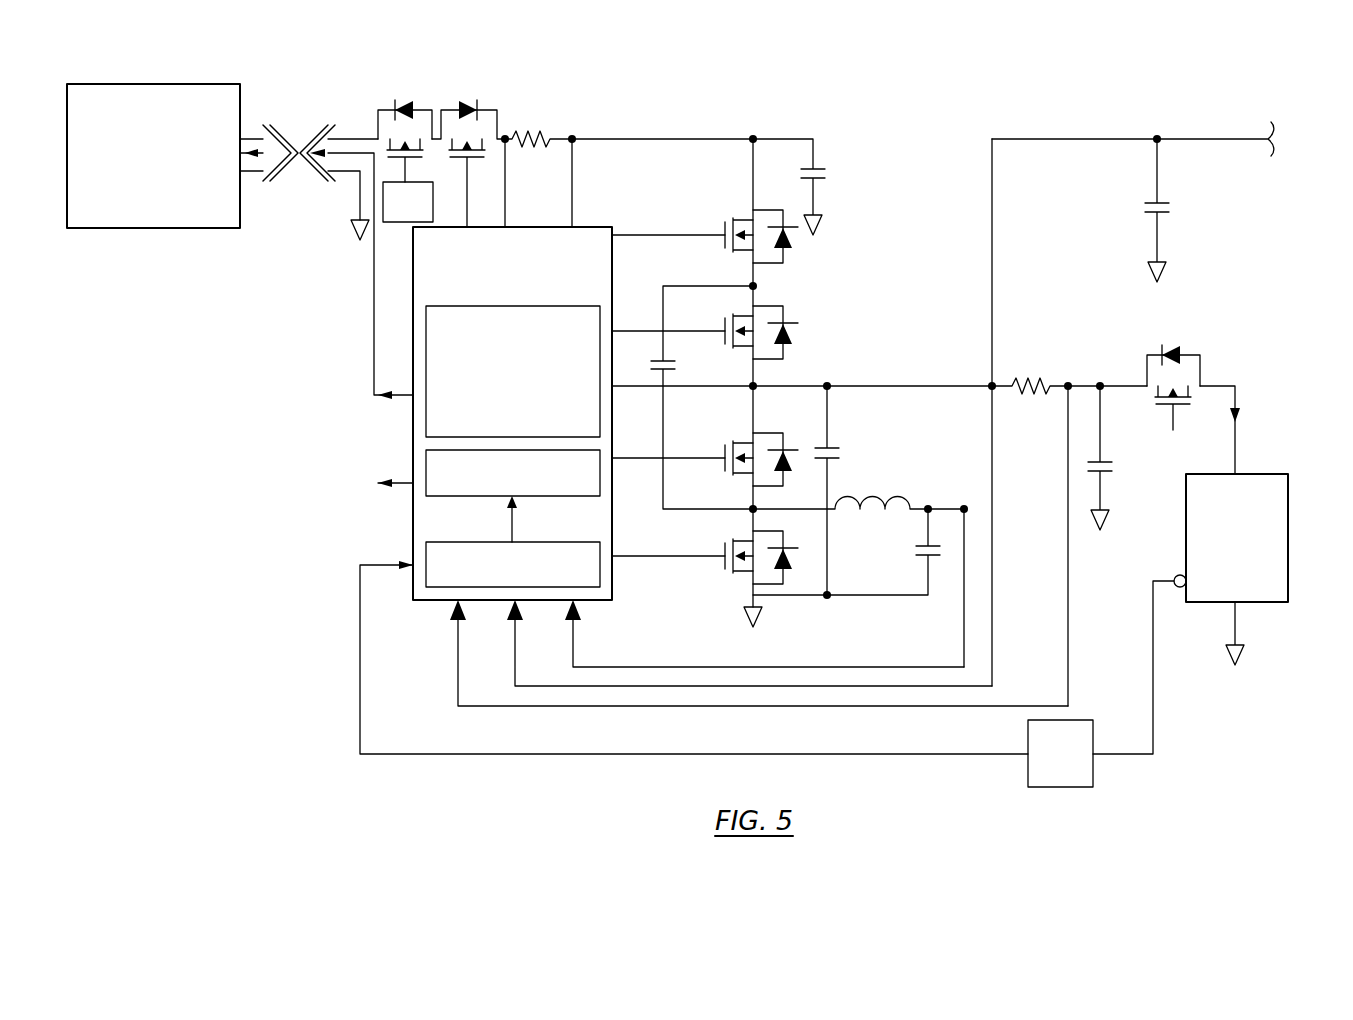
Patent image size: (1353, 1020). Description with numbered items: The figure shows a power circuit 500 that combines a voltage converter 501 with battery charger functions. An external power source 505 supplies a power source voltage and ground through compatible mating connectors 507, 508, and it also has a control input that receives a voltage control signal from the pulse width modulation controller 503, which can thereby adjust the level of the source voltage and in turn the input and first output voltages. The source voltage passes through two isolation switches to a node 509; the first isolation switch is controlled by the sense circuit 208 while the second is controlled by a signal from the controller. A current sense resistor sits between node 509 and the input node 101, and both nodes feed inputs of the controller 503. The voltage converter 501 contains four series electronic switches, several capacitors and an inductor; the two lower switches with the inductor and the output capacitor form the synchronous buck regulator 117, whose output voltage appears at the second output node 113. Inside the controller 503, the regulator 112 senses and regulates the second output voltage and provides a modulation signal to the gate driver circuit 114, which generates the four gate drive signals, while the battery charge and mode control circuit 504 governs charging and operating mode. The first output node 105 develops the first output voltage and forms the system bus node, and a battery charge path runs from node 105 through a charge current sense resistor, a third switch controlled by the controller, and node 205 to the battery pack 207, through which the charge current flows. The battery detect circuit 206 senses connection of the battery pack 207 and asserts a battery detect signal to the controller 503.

The power circuit 500 is at (250, 471).
The external power source 505 is at (170, 202).
The mating connector 507 is at (283, 130).
The mating connector 508 is at (310, 130).
The sense circuit 208 is at (425, 218).
The node 509 is at (505, 135).
The input node 101 is at (572, 135).
The PWM controller 503 is at (530, 297).
The battery charge and mode control circuit 504 is at (530, 427).
The gate driver circuit 114 is at (530, 490).
The regulator 112 is at (530, 585).
The voltage converter 501 is at (853, 264).
The first output node 105 is at (827, 382).
The synchronous buck regulator 117 is at (893, 467).
The second output node 113 is at (968, 510).
The node 205 is at (1236, 383).
The battery pack 207 is at (1253, 584).
The battery detect circuit 206 is at (1028, 737).